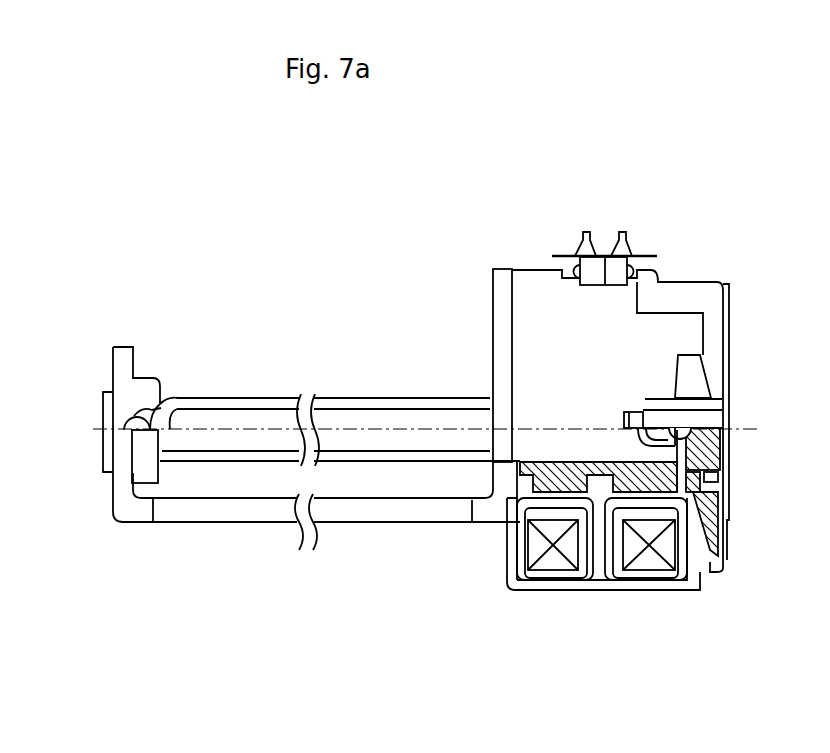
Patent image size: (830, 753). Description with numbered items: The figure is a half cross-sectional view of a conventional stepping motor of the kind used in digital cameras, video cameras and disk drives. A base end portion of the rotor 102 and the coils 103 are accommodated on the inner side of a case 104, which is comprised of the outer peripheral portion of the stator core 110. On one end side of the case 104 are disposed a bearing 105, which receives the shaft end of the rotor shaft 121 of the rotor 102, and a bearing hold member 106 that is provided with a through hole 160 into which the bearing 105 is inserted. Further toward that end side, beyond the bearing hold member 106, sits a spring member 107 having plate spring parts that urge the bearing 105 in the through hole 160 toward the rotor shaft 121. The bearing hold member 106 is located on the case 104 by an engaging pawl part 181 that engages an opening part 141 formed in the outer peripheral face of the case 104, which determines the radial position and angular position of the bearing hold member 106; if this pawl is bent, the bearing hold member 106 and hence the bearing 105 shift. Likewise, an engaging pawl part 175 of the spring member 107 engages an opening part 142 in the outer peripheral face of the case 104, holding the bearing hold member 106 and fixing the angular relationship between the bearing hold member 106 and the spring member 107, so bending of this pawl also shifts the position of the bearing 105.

The rotor 102 is at (511, 475).
The coils 103 is at (637, 545).
The case 104 is at (612, 583).
The stator core 110 is at (601, 543).
The bearing 105 is at (702, 451).
The bearing hold member 106 is at (702, 488).
The spring member 107 is at (712, 397).
The rotor shaft 121 is at (412, 442).
The opening part 141 is at (660, 278).
The opening part 142 is at (640, 410).
The through hole 160 is at (703, 465).
The engaging pawl part 175 is at (713, 414).
The engaging pawl part 181 is at (690, 297).